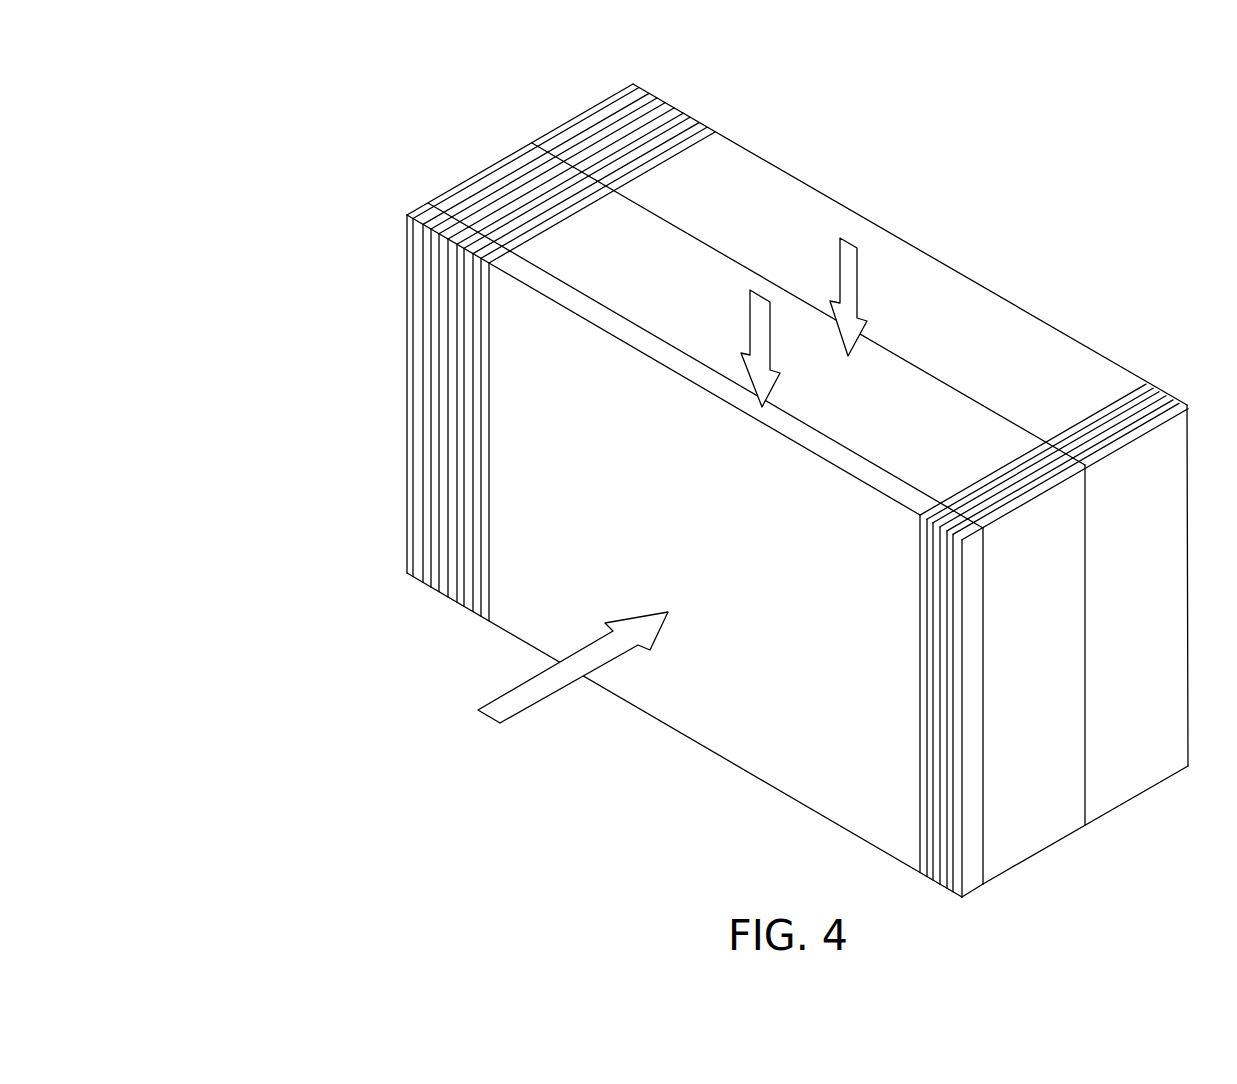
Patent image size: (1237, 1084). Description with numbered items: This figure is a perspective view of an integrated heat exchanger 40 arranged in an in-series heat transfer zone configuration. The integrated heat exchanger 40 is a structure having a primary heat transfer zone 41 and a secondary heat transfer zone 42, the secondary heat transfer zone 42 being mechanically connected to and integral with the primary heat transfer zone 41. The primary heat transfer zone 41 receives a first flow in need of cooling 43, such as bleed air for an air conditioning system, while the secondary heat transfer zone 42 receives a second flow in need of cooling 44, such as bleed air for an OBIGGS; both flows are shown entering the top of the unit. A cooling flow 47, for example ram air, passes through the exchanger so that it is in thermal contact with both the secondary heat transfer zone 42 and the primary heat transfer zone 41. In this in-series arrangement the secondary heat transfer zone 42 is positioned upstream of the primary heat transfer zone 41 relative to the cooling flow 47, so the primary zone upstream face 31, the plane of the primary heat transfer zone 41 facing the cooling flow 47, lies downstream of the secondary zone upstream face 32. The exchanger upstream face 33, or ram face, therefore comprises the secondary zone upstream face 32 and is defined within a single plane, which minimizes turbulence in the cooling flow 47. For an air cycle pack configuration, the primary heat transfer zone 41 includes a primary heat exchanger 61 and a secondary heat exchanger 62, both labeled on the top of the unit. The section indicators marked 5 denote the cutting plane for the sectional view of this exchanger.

The integrated heat exchanger 40 is at (688, 339).
The primary zone upstream face 31 is at (983, 610).
The secondary zone upstream face 32 is at (674, 699).
The exchanger upstream face 33 is at (704, 531).
The primary heat transfer zone 41 is at (987, 710).
The secondary heat transfer zone 42 is at (957, 752).
The first flow in need of cooling 43 is at (857, 293).
The second flow in need of cooling 44 is at (770, 342).
The cooling flow 47 is at (506, 692).
The primary heat exchanger 61 is at (750, 217).
The secondary heat exchanger 62 is at (672, 294).
The section line 5- 5 is at (425, 177).